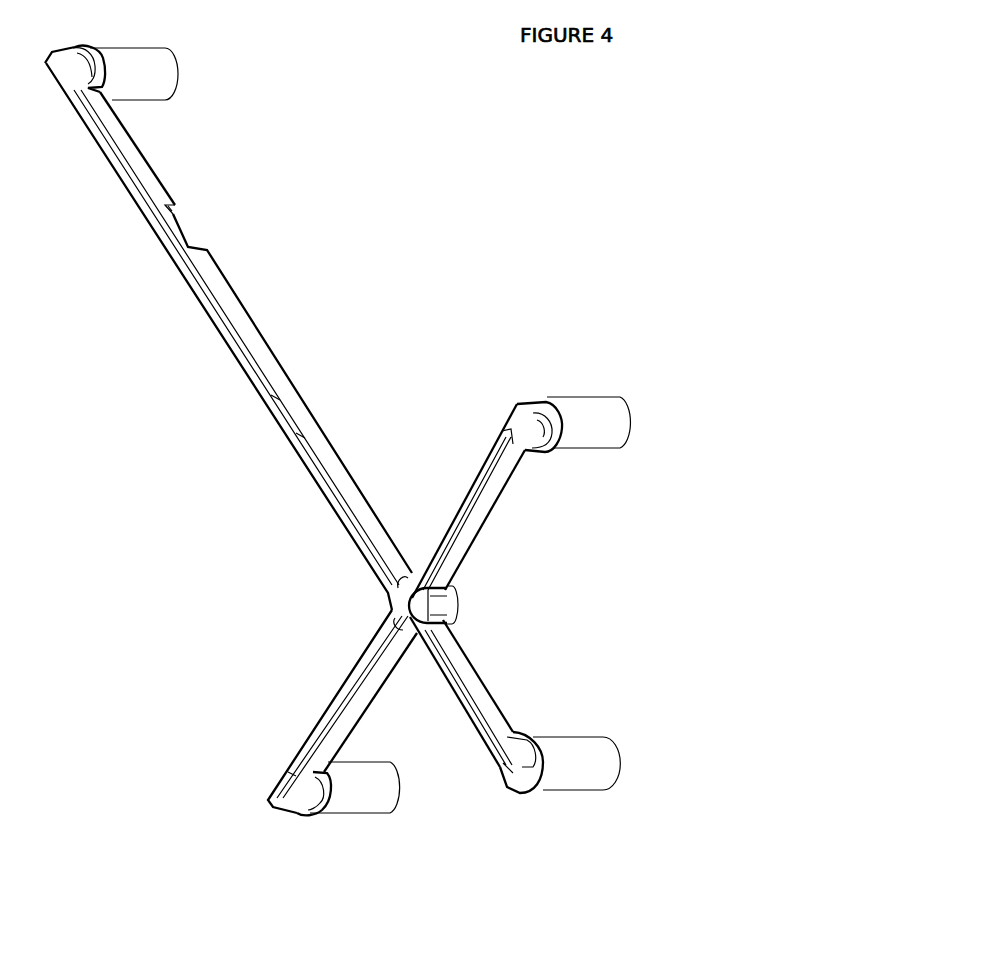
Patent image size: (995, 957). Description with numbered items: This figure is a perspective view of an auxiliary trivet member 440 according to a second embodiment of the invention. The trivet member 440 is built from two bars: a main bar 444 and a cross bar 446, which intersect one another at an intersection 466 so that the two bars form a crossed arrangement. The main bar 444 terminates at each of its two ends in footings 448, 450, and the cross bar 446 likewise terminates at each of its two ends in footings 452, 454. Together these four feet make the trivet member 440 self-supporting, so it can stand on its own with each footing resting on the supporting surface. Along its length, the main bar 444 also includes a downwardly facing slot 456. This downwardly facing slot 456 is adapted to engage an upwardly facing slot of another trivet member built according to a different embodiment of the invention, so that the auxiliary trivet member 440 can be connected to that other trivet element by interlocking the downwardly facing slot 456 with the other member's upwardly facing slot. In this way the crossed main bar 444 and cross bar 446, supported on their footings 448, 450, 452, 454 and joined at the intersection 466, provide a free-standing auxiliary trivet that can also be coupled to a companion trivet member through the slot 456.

The trivet member 440 is at (293, 163).
The main bar 444 is at (233, 360).
The cross bar 446 is at (330, 697).
The footing 448 is at (168, 63).
The footing 450 is at (570, 779).
The footing 452 is at (382, 802).
The footing 454 is at (582, 410).
The downwardly facing slot 456 is at (203, 236).
The intersection 466 is at (395, 603).